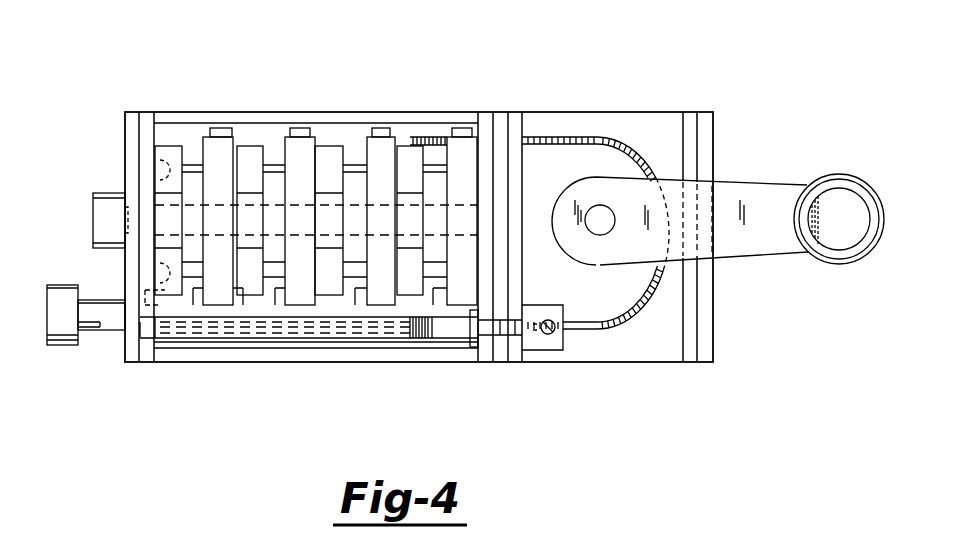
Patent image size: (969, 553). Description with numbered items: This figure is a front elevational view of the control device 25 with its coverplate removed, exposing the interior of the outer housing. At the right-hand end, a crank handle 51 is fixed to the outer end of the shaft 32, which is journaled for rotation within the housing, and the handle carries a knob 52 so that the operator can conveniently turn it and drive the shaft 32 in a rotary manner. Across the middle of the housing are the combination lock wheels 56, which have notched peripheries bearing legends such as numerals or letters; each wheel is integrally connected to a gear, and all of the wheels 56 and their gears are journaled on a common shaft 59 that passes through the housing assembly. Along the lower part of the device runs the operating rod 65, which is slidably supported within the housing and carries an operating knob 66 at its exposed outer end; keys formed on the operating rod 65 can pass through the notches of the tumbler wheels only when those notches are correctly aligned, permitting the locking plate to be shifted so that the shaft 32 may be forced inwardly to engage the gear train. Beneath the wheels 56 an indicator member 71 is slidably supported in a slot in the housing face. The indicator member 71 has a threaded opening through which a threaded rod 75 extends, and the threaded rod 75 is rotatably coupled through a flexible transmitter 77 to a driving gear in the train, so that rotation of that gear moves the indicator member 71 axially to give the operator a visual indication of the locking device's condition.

The control device 25 is at (669, 84).
The shaft 32 is at (598, 233).
The crank handle 51 is at (747, 182).
The knob 52 is at (840, 175).
The wheels 56 is at (223, 132).
The common shaft 59 is at (100, 193).
The operating rod 65 is at (98, 330).
The operating knob 66 is at (65, 337).
The indicator member 71 is at (418, 339).
The threaded rod 75 is at (457, 338).
The flexible transmitter 77 is at (540, 138).